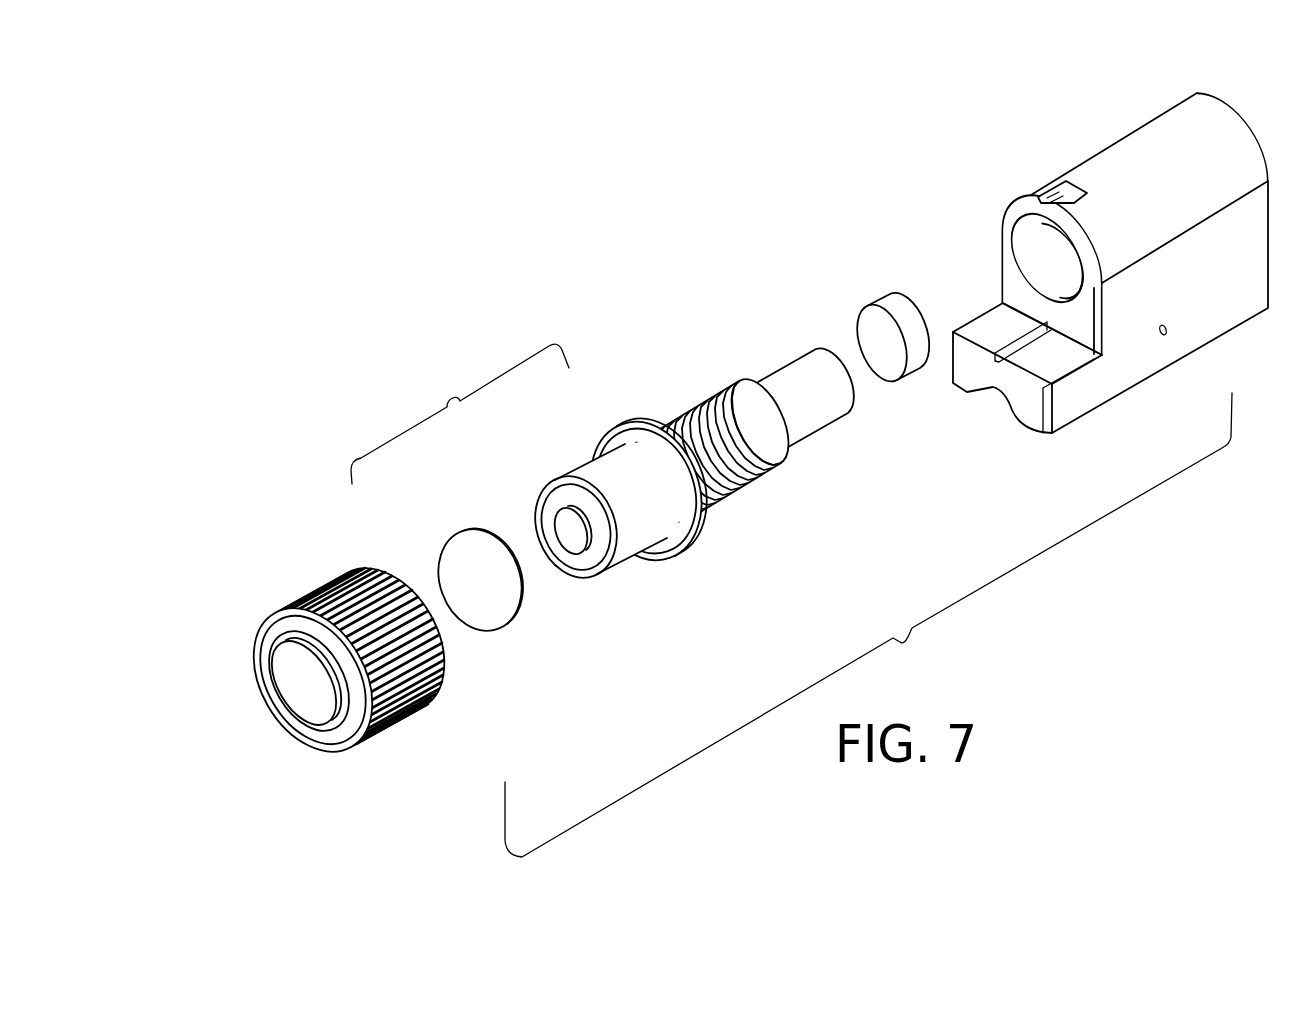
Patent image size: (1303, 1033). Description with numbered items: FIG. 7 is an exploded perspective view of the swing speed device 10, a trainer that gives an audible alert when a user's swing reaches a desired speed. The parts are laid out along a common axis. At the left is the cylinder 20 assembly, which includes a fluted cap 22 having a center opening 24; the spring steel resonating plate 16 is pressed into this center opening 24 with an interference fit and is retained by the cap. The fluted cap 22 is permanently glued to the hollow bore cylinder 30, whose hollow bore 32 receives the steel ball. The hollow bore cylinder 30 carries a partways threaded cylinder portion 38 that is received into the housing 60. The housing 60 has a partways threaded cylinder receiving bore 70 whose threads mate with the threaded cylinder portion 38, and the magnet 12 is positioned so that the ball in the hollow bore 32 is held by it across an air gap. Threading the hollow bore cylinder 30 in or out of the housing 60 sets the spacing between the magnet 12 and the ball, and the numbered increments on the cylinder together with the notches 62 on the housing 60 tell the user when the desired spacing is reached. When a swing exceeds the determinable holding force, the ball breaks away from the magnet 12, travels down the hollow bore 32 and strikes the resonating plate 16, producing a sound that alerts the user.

The swing speed device 10 is at (868, 625).
The magnet 12 is at (887, 313).
The resonating plate 16 is at (482, 532).
The cylinder 20 is at (460, 414).
The fluted cap 22 is at (331, 583).
The center opening 24 is at (300, 690).
The hollow bore cylinder 30 is at (688, 480).
The hollow bore 32 is at (577, 540).
The threaded cylinder portion 38 is at (733, 490).
The housing 60 is at (1173, 125).
The notches 62 is at (1062, 188).
The cylinder receiving bore 70 is at (1067, 243).